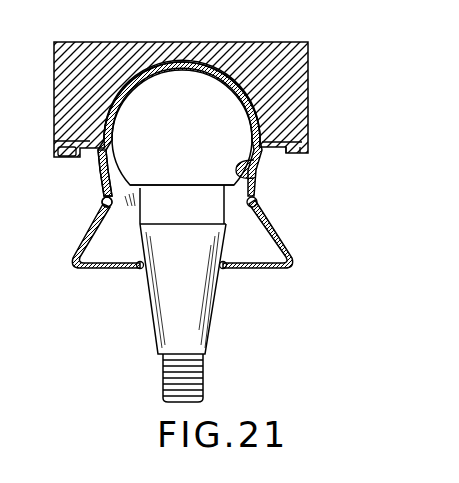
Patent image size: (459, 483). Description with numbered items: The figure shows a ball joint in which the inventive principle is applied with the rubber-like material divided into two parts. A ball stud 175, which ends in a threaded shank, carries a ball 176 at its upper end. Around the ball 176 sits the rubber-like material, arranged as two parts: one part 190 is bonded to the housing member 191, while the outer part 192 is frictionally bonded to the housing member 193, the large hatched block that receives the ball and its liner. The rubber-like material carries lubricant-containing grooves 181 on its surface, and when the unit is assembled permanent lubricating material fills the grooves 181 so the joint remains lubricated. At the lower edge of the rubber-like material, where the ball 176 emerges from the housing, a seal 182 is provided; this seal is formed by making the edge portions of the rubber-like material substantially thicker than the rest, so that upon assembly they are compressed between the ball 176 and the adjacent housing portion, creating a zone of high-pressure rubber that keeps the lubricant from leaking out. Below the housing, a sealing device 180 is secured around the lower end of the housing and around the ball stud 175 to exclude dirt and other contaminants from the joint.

The ball stud 175 is at (208, 329).
The ball 176 is at (182, 137).
The sealing device 180 is at (266, 222).
The lubricant-containing grooves 181 is at (145, 80).
The seal 182 is at (268, 165).
The rubber-like material part 190 is at (96, 160).
The housing member 191 is at (103, 188).
The outer rubber-like part 192 is at (165, 65).
The housing member 193 is at (280, 47).